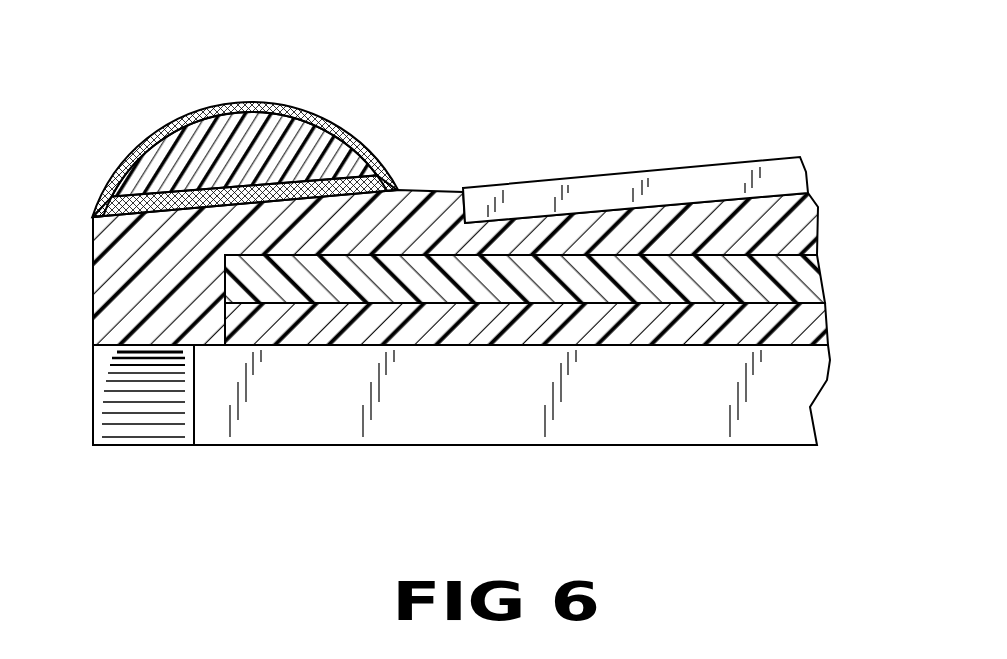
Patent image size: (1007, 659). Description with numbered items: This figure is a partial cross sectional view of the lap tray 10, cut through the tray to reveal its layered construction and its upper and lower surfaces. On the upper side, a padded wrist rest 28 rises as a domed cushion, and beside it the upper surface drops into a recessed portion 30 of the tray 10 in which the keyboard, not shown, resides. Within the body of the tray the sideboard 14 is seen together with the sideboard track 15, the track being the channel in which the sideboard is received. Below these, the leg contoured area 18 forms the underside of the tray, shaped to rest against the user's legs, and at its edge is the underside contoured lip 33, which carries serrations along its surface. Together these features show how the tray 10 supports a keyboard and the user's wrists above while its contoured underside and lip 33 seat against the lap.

The lap tray 10 is at (112, 247).
The sideboard 14 is at (790, 285).
The sideboard track 15 is at (228, 278).
The leg contoured area 18 is at (790, 388).
The padded wrist rest 28 is at (181, 117).
The recessed portion 30 is at (507, 190).
The underside contoured lip 33 is at (100, 375).